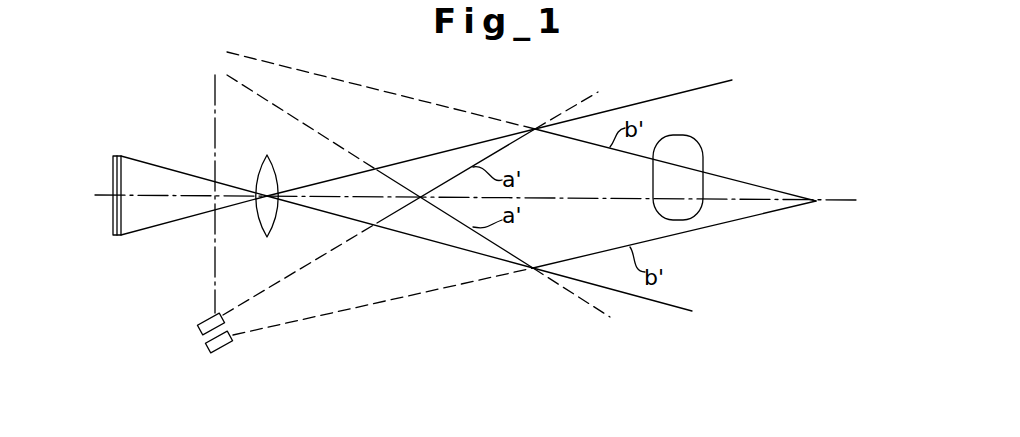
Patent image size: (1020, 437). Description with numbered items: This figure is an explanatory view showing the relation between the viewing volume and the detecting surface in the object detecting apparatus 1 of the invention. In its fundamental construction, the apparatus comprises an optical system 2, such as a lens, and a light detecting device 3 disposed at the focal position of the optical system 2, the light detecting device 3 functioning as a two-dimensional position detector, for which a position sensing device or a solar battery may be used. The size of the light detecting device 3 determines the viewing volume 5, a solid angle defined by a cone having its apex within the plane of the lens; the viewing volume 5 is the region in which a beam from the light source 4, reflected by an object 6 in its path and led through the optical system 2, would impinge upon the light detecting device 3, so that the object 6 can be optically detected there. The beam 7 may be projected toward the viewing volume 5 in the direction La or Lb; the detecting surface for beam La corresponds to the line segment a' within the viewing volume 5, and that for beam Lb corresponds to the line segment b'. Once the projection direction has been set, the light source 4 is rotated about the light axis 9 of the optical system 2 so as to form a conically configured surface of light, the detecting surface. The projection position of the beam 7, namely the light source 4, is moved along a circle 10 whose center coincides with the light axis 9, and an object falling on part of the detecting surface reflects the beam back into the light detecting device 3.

The object detecting apparatus 1 is at (361, 112).
The optical system 2 is at (268, 171).
The light detecting device 3 is at (115, 173).
The light source 4 is at (206, 327).
The viewing volume 5 is at (694, 102).
The object 6 is at (697, 153).
The beam 7 is at (282, 280).
The light axis 9 is at (588, 198).
The circle 10 is at (213, 123).